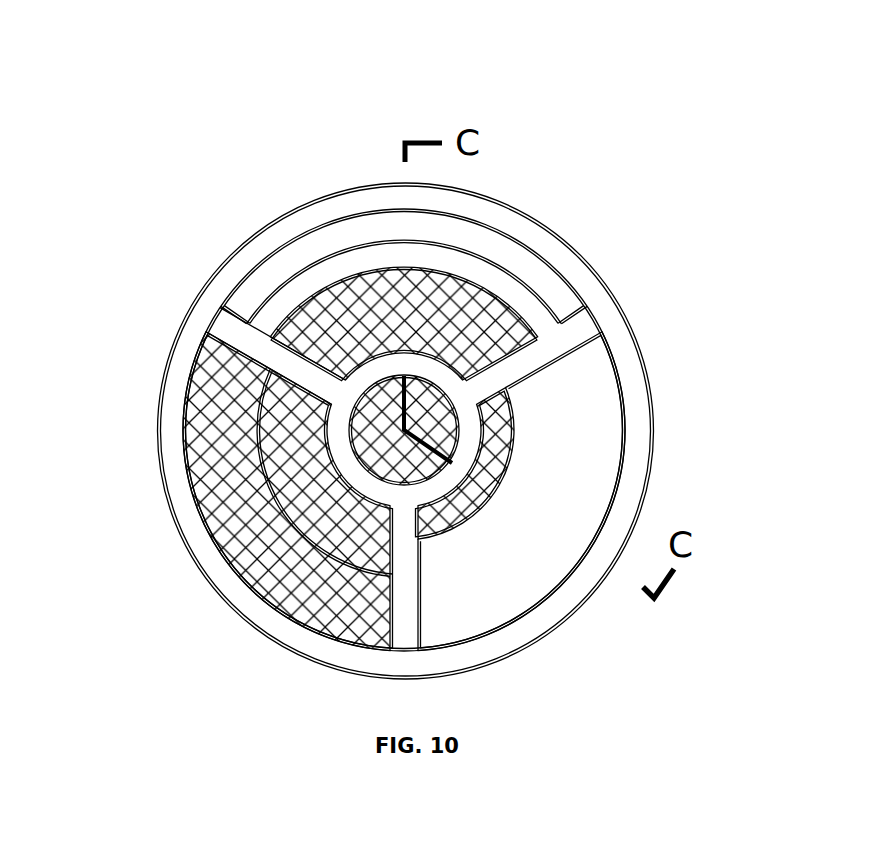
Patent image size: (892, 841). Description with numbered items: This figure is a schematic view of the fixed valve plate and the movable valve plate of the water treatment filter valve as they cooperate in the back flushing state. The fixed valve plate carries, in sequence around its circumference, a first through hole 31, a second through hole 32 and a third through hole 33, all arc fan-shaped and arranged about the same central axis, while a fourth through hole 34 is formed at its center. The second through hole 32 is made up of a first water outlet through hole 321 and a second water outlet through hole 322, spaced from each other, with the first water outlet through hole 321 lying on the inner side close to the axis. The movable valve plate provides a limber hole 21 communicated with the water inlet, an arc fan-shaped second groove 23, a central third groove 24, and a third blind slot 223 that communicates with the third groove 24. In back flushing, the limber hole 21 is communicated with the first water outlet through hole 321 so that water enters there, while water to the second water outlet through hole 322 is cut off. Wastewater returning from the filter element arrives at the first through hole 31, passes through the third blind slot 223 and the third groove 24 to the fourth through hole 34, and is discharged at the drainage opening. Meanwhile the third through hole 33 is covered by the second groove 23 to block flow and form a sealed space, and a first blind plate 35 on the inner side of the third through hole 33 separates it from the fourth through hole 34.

The limber hole 21 is at (477, 320).
The second groove 23 is at (318, 508).
The third groove 24 is at (304, 320).
The first through hole 31 is at (601, 463).
The second through hole 32 is at (411, 207).
The third through hole 33 is at (215, 405).
The fourth through hole 34 is at (397, 463).
The first blind plate 35 is at (292, 493).
The third blind slot 223 is at (494, 460).
The first water outlet through hole 321 is at (363, 302).
The second water outlet through hole 322 is at (545, 272).